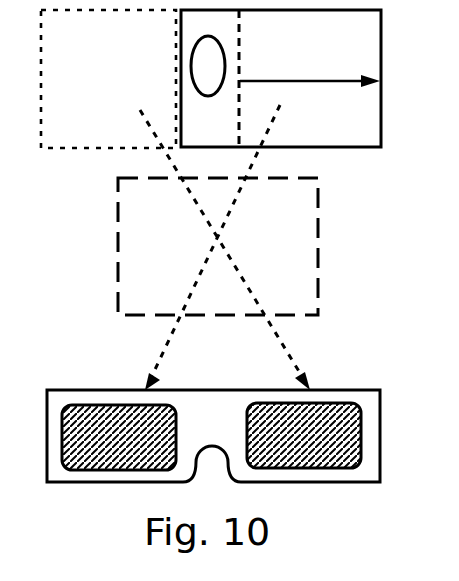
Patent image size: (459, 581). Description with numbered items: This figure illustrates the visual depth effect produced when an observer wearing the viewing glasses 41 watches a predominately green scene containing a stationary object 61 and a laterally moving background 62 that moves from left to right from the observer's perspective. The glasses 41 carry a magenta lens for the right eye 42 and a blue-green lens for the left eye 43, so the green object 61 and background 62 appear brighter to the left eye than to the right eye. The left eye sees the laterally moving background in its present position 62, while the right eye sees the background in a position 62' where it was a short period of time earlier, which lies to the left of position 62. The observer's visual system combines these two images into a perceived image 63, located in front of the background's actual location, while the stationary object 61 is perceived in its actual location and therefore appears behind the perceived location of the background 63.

The viewing glasses 41 is at (230, 390).
The magenta lens for the right eye 42 is at (337, 413).
The blue-green lens for the left eye 43 is at (100, 415).
The stationary object 61 is at (205, 64).
The laterally moving background 62 is at (281, 113).
The earlier position of the background 62' is at (108, 120).
The perceived image of the background 63 is at (283, 223).